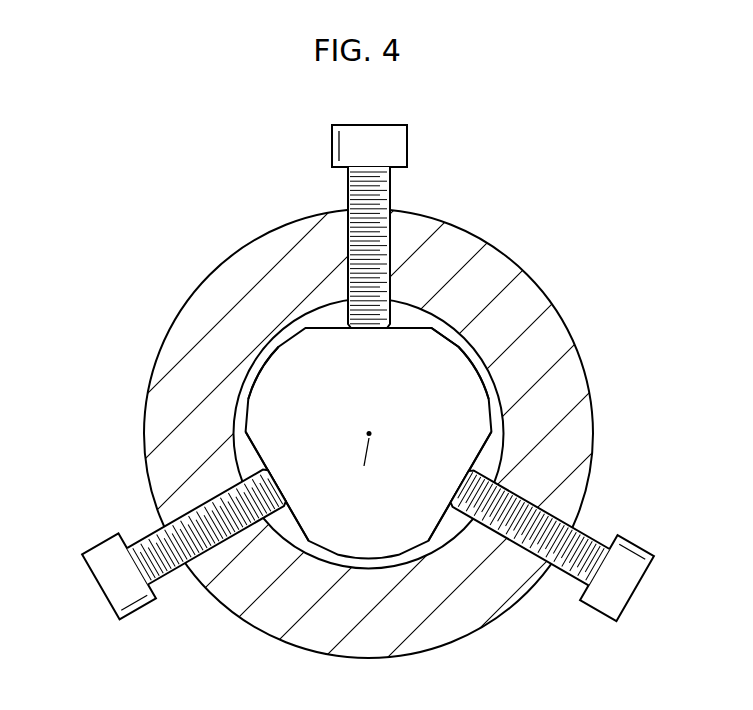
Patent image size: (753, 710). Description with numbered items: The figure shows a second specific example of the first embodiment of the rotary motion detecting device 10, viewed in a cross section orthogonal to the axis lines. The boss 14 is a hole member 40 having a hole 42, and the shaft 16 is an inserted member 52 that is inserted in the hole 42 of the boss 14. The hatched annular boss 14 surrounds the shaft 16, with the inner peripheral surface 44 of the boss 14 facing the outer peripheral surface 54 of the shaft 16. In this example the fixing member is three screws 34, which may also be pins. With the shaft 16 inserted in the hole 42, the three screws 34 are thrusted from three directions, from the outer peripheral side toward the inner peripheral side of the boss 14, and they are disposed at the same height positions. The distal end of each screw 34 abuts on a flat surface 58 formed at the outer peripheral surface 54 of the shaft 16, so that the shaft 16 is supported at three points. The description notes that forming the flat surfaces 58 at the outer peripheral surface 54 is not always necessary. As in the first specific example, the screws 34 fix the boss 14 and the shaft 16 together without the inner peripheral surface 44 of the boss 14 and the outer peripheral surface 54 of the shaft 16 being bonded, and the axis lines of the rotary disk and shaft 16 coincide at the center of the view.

The rotary motion detecting device 10 is at (131, 151).
The boss 14 is at (556, 328).
The hole member 40 is at (370, 435).
The shaft 16 is at (272, 401).
The inserted member 52 is at (369, 443).
The screws 34 is at (369, 143).
The hole 42 is at (471, 348).
The inner peripheral surface 44 is at (450, 336).
The outer peripheral surface 54 is at (278, 357).
The flat surfaces 58 is at (413, 327).